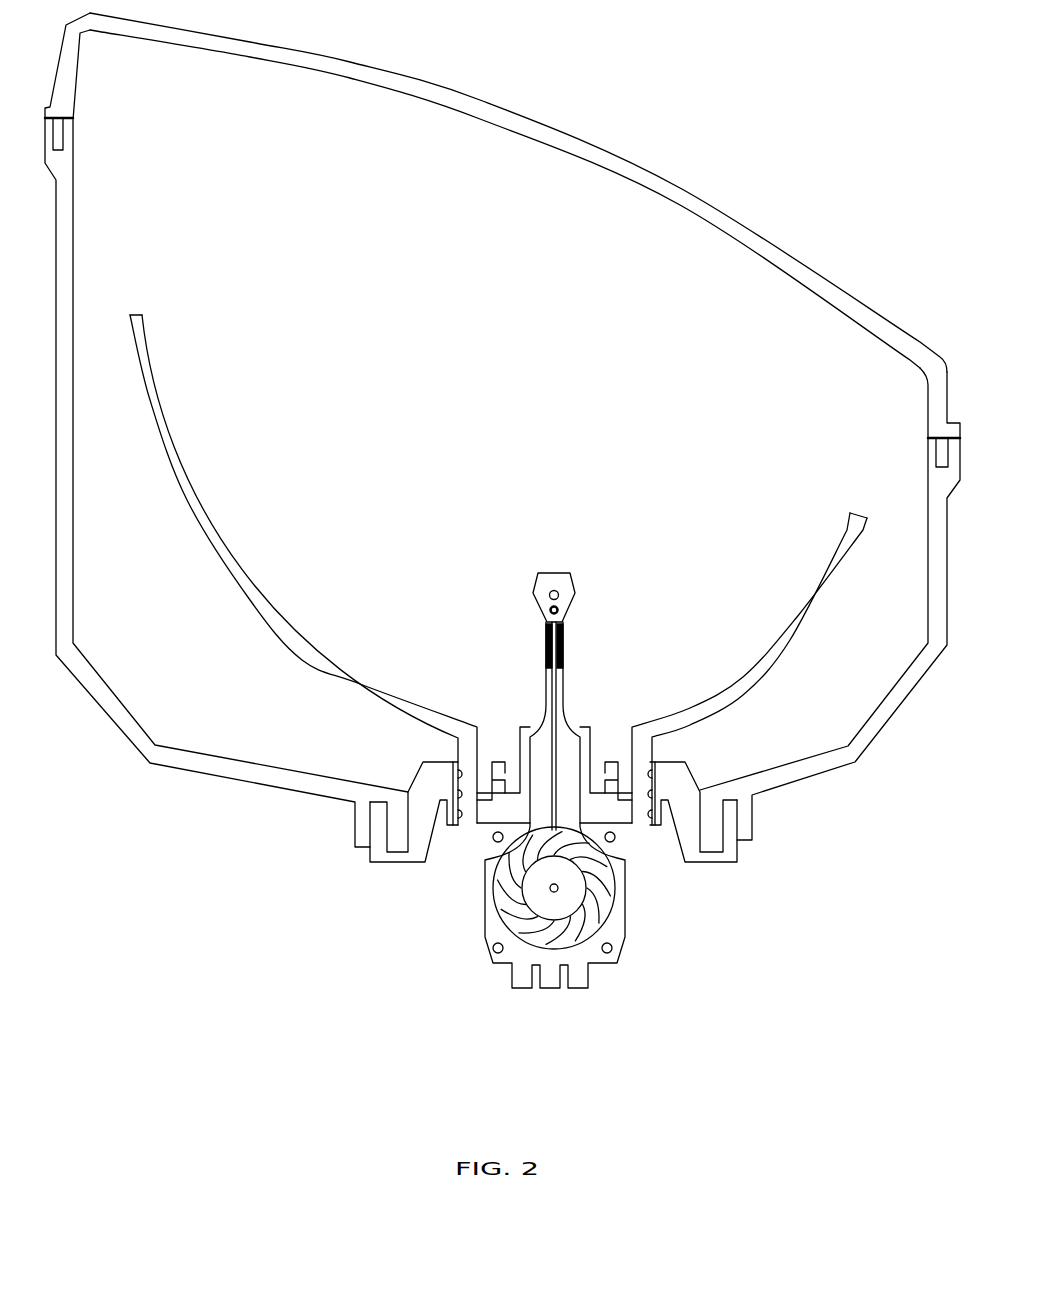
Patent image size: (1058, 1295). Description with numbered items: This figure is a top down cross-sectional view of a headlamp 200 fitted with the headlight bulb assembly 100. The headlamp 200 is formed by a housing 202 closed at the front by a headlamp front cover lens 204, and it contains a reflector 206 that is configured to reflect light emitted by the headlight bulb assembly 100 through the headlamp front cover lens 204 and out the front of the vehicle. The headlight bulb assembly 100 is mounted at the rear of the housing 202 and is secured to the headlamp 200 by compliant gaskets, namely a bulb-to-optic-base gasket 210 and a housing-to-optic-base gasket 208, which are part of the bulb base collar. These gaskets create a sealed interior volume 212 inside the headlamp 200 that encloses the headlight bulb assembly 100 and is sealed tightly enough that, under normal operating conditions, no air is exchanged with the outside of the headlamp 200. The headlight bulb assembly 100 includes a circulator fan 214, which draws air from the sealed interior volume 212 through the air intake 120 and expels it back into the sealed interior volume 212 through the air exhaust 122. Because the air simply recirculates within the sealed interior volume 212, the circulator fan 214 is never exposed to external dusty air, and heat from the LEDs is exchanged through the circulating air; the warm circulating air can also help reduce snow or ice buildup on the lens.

The headlamp 200 is at (596, 76).
The headlight bulb assembly 100 is at (576, 543).
The air intake 120 is at (524, 703).
The air exhaust 122 is at (576, 703).
The housing 202 is at (108, 688).
The headlamp front cover lens 204 is at (808, 290).
The reflector 206 is at (797, 617).
The housing-to-optic-base gasket 208 is at (385, 857).
The bulb-to-optic-base gasket 210 is at (477, 810).
The sealed interior volume 212 is at (388, 354).
The circulator fan 214 is at (575, 903).